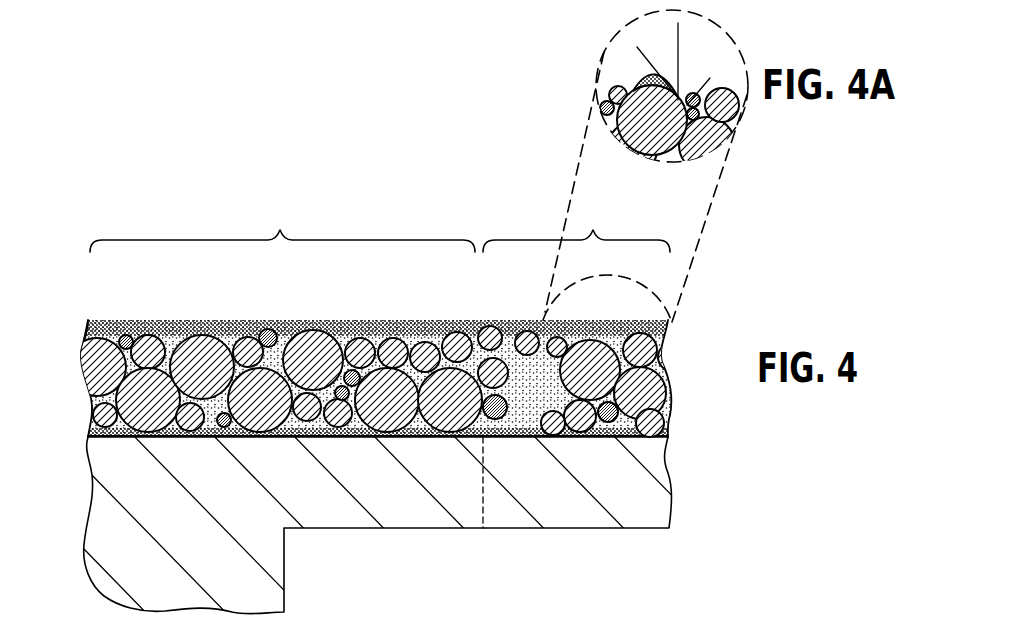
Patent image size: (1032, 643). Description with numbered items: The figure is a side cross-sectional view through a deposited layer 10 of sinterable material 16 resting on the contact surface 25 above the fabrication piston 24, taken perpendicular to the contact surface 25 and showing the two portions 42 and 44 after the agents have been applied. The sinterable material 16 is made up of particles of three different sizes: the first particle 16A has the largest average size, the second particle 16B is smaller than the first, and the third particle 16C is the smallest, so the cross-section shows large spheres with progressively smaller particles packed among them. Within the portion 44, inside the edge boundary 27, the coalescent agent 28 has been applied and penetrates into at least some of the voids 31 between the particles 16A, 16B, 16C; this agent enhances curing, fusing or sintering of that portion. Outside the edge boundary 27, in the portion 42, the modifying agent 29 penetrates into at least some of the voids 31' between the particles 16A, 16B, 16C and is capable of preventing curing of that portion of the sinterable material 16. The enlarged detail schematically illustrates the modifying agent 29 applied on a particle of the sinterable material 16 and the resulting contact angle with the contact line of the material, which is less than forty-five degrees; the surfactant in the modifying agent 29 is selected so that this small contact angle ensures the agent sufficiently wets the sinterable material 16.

In FIG. 4, the layer 10 is at (114, 312).
In FIG. 4, the fabrication piston 24 is at (262, 576).
In FIG. 4, the coalescent agent 28 is at (164, 345).
In FIG. 4, the portion 44 is at (282, 226).
In FIG. 4, the portion 42 is at (576, 226).
In FIG. 4, the sinterable material 16 is at (520, 414).
In FIG. 4, the first particle 16A is at (322, 355).
In FIG. 4A, the first particle 16A is at (640, 118).
In FIG. 4, the second particle 16B is at (376, 336).
In FIG. 4, the third particle 16C is at (268, 330).
In FIG. 4, the edge boundary 27 is at (490, 326).
In FIG. 4, the modifying agent 29 is at (529, 333).
In FIG. 4A, the modifying agent 29 is at (630, 84).
In FIG. 4, the contact surface 25 is at (650, 413).
In FIG. 4, the voids 31 is at (412, 475).
In FIG. 4, the voids 31' is at (668, 444).